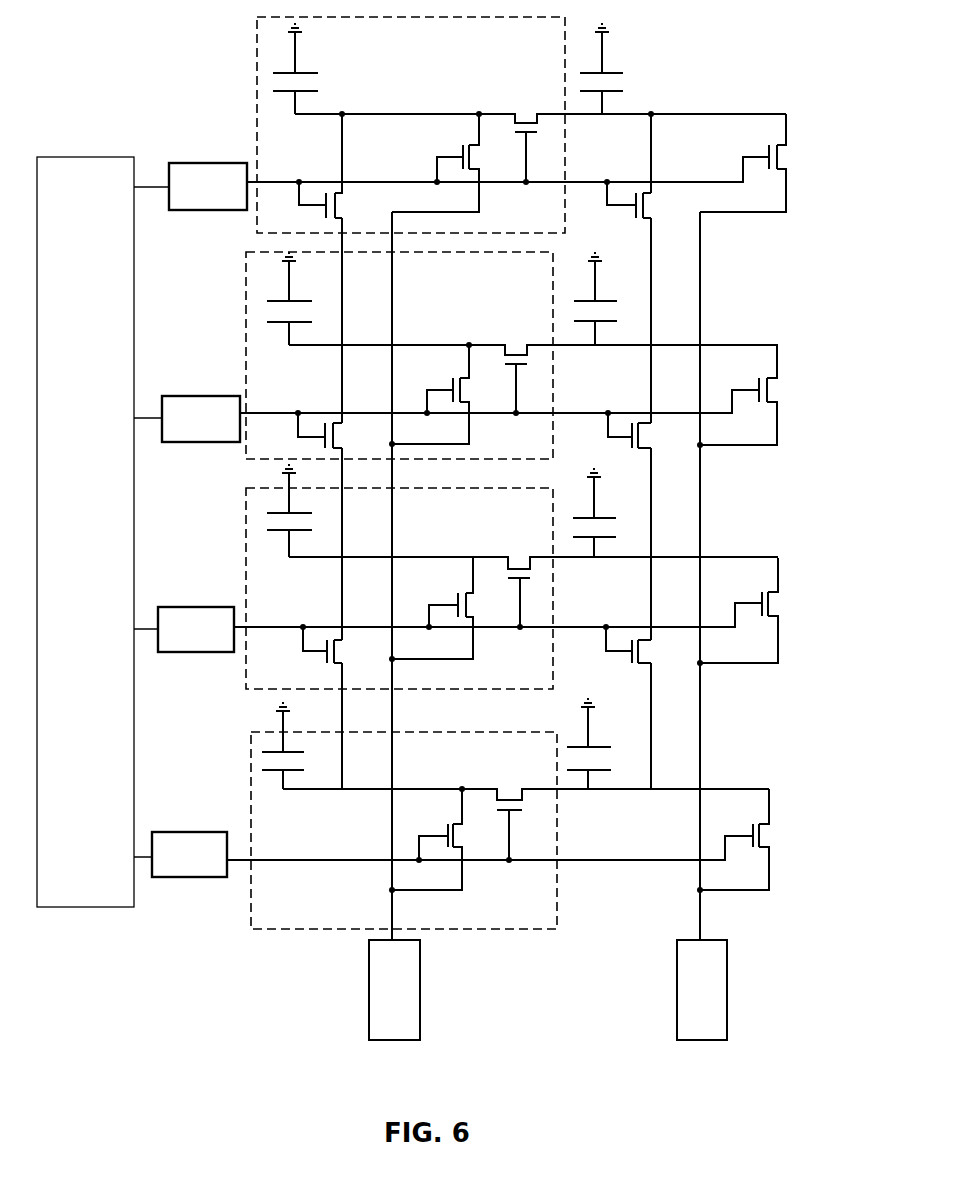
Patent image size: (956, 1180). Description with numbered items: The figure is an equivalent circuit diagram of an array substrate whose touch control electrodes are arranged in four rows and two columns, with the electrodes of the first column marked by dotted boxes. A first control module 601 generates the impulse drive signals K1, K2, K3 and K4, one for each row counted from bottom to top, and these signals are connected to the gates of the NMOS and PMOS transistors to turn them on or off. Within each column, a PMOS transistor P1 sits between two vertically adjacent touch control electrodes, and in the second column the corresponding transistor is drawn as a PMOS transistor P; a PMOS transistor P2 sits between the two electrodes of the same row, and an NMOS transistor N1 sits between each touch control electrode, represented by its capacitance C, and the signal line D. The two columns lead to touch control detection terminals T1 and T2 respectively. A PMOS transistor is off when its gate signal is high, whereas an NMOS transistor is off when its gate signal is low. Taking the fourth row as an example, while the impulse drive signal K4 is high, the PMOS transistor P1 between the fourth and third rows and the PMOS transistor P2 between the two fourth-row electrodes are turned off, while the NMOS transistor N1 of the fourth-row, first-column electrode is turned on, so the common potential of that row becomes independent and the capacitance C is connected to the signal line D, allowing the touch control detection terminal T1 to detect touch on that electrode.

The first control module 601 is at (85, 517).
The impulse drive signal K1 is at (189, 854).
The impulse drive signal K2 is at (196, 629).
The impulse drive signal K3 is at (201, 419).
The impulse drive signal K4 is at (208, 186).
The capacitance C is at (458, 406).
The PMOS transistor P1 is at (488, 388).
The PMOS transistor P2 is at (534, 472).
The PMOS transistor P is at (639, 538).
The NMOS transistor N1 is at (604, 502).
The touch control detection terminal T1 is at (394, 990).
The touch control detection terminal T2 is at (702, 990).
The signal line D is at (392, 907).